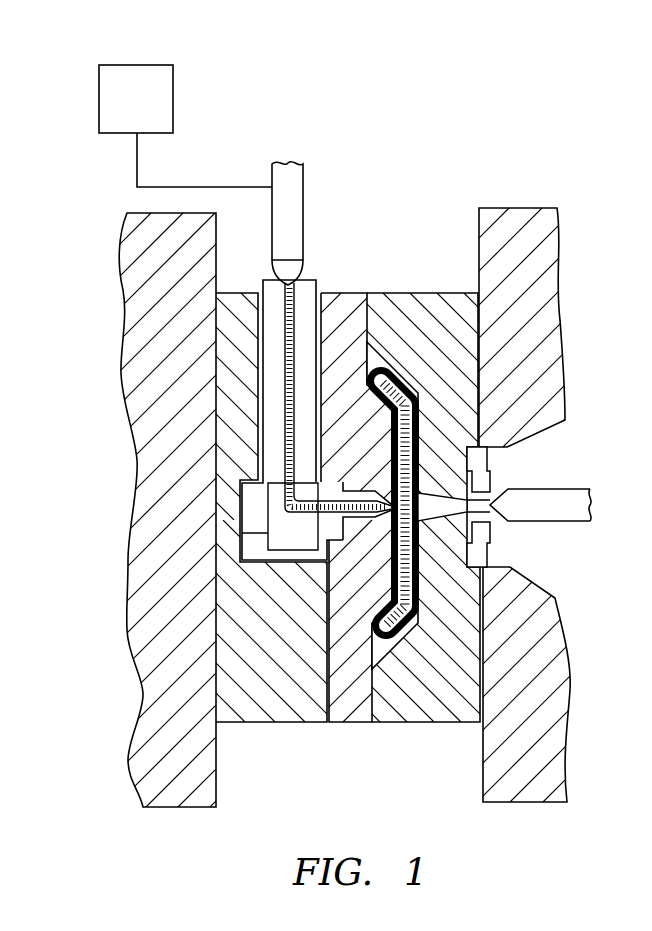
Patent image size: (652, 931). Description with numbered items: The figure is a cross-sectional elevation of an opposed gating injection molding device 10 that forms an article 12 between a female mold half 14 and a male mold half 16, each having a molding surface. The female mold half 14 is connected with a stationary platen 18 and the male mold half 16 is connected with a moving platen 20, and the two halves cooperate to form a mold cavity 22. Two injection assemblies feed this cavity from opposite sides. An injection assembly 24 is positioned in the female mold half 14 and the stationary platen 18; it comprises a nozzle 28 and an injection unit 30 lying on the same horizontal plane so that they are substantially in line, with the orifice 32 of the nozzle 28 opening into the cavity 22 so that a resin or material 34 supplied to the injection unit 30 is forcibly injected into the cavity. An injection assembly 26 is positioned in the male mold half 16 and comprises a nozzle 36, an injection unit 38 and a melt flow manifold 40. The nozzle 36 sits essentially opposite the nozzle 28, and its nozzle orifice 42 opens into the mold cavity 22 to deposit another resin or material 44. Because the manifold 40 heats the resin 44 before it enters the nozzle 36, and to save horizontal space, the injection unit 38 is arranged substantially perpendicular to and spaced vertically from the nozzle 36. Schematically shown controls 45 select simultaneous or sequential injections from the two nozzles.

The opposed gating injection molding device 10 is at (326, 507).
The article 12 is at (392, 367).
The female mold half 14 is at (436, 720).
The male mold half 16 is at (348, 720).
The stationary platen 18 is at (517, 793).
The moving platen 20 is at (187, 795).
The mold cavity 22 is at (412, 388).
The injection assembly 24 is at (552, 492).
The injection assembly 26 is at (253, 283).
The nozzle 28 is at (488, 482).
The injection unit 30 is at (580, 518).
The orifice 32 is at (422, 522).
The resin or material 34 is at (488, 530).
The nozzle 36 is at (343, 478).
The injection unit 38 is at (300, 196).
The melt flow manifold 40 is at (307, 287).
The nozzle orifice 42 is at (392, 513).
The resin or material 44 is at (290, 417).
The controls 45 is at (118, 112).